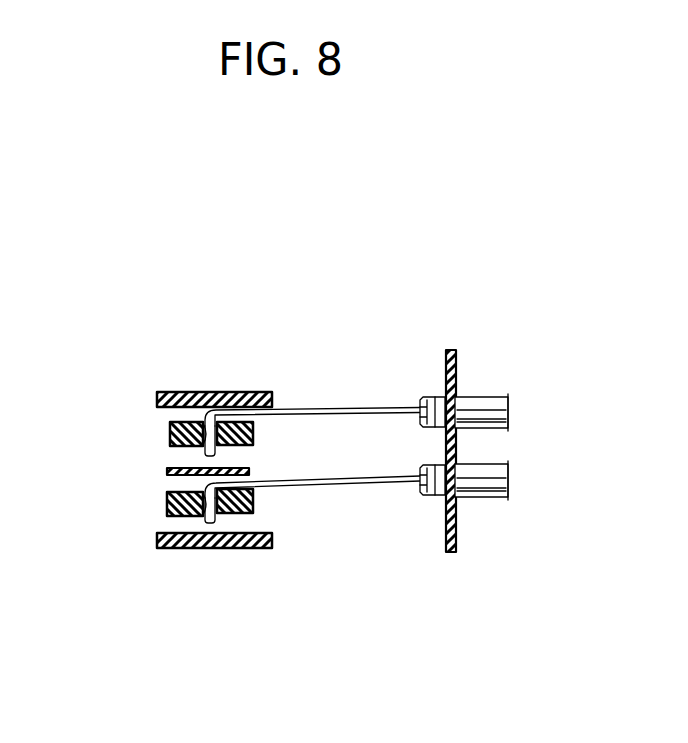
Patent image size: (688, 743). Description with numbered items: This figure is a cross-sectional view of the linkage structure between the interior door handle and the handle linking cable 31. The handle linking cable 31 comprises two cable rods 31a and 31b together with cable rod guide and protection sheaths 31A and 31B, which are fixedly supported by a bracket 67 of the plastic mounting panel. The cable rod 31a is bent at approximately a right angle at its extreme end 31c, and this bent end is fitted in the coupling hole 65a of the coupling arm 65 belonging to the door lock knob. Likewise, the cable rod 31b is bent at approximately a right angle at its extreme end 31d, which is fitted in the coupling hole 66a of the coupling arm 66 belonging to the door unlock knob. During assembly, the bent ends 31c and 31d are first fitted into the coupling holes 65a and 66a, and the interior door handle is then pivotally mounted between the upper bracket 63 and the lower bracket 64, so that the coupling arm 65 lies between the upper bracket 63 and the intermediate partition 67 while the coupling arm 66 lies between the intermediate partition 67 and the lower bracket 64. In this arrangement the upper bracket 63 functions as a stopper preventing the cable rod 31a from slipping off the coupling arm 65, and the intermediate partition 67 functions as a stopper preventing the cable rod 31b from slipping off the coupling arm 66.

The handle linking cable 31 is at (422, 376).
The cable rod 31a is at (312, 397).
The cable rod 31b is at (312, 528).
The extreme end of cable rod 31c is at (220, 452).
The extreme end of cable rod 31d is at (222, 520).
The cable rod guide and protection sheath 31A is at (472, 397).
The cable rod guide and protection sheath 31B is at (473, 497).
The upper bracket 63 is at (243, 392).
The lower bracket 64 is at (231, 548).
The coupling arm 65 is at (170, 430).
The coupling hole 65a is at (203, 450).
The coupling arm 66 is at (167, 503).
The coupling hole 66a is at (170, 522).
The intermediate partition 67 is at (167, 476).